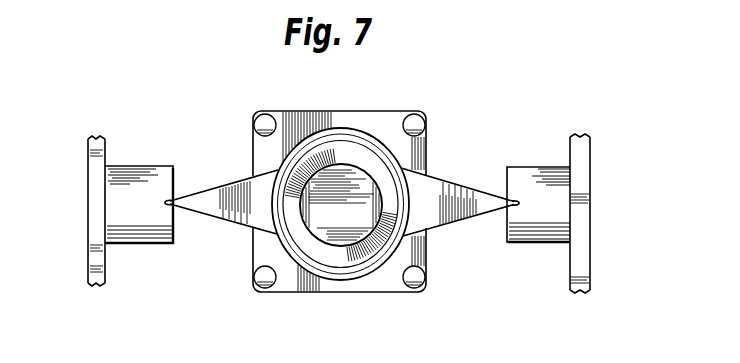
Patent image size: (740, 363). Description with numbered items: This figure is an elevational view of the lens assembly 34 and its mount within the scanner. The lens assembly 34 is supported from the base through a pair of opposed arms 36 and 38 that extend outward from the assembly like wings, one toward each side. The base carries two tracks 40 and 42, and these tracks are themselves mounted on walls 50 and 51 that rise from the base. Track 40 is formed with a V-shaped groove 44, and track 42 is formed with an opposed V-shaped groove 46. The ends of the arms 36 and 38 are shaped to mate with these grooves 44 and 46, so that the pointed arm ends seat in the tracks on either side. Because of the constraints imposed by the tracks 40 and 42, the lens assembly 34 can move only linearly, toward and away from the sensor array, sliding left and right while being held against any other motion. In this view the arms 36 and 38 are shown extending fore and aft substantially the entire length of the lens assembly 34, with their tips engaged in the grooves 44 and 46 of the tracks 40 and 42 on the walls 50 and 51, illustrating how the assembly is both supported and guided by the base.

The lens assembly 34 is at (376, 135).
The arm 36 is at (226, 192).
The arm 38 is at (444, 194).
The track 40 is at (123, 182).
The track 42 is at (532, 177).
The V-shaped groove 44 is at (172, 208).
The V-shaped groove 46 is at (500, 200).
The wall 50 is at (106, 154).
The wall 51 is at (579, 268).